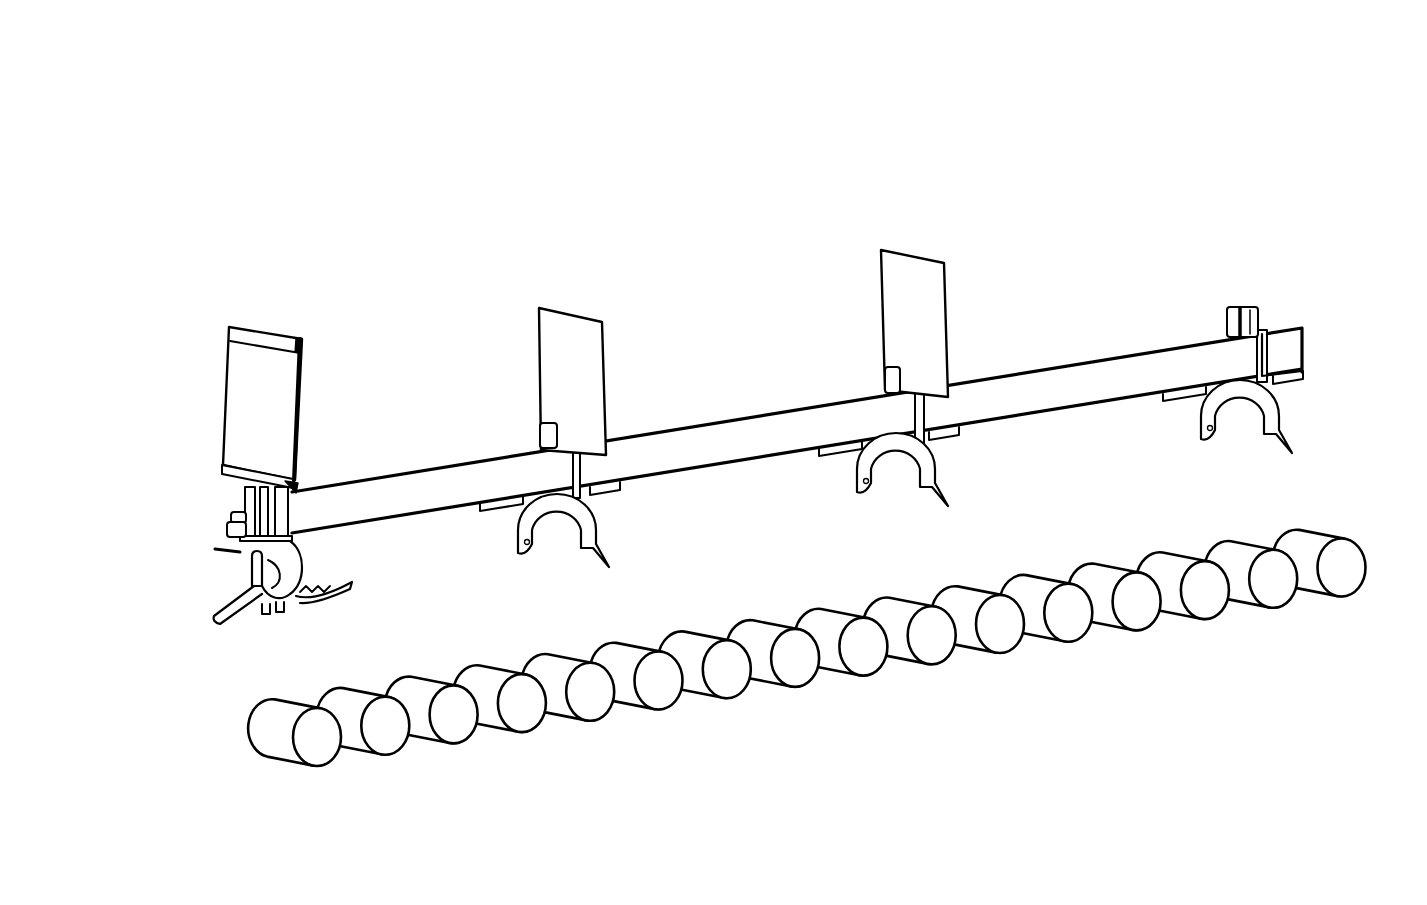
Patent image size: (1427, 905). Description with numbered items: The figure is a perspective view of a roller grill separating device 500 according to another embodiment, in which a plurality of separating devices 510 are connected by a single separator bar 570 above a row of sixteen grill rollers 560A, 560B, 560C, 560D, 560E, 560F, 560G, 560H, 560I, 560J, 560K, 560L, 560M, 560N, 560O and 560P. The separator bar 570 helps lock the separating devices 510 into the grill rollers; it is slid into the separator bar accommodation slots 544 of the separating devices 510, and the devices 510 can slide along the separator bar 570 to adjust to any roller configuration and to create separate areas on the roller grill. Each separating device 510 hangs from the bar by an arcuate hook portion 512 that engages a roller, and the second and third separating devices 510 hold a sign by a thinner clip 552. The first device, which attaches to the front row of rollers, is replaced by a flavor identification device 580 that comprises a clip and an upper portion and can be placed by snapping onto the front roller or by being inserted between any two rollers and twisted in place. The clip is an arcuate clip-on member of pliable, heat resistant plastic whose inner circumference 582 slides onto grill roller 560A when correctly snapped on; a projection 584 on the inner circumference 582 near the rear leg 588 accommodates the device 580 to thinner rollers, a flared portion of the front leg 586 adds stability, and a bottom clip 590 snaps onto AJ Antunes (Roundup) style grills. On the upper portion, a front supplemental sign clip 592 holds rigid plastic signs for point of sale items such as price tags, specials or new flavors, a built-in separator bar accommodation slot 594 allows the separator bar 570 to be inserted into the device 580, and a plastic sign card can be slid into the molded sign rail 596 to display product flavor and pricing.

The roller grill separating device 500 is at (445, 216).
The separating device 510 is at (1318, 383).
The hook clip 512 is at (562, 500).
The separator bar accommodation slot 544 is at (583, 466).
The thinner clip 552 is at (538, 437).
The separator bar 570 is at (785, 430).
The flavor identification device 580 is at (170, 470).
The inner circumference 582 is at (268, 567).
The projection 584 is at (320, 600).
The front leg 586 is at (257, 600).
The rear leg 588 is at (347, 587).
The bottom clip 590 is at (273, 620).
The front supplemental sign clip 592 is at (232, 522).
The built-in separator bar accommodation slot 594 is at (292, 486).
The molded sign rail 596 is at (262, 407).
The grill roller 560A is at (319, 746).
The grill roller 560B is at (387, 735).
The grill roller 560C is at (456, 723).
The grill roller 560D is at (524, 712).
The grill roller 560E is at (592, 700).
The grill roller 560F is at (660, 689).
The grill roller 560G is at (729, 678).
The grill roller 560H is at (797, 666).
The grill roller 560I is at (865, 655).
The grill roller 560J is at (933, 644).
The grill roller 560K is at (1002, 633).
The grill roller 560L is at (1070, 622).
The grill roller 560M is at (1138, 610).
The grill roller 560N is at (1207, 599).
The grill roller 560O is at (1275, 588).
The grill roller 560P is at (1343, 576).